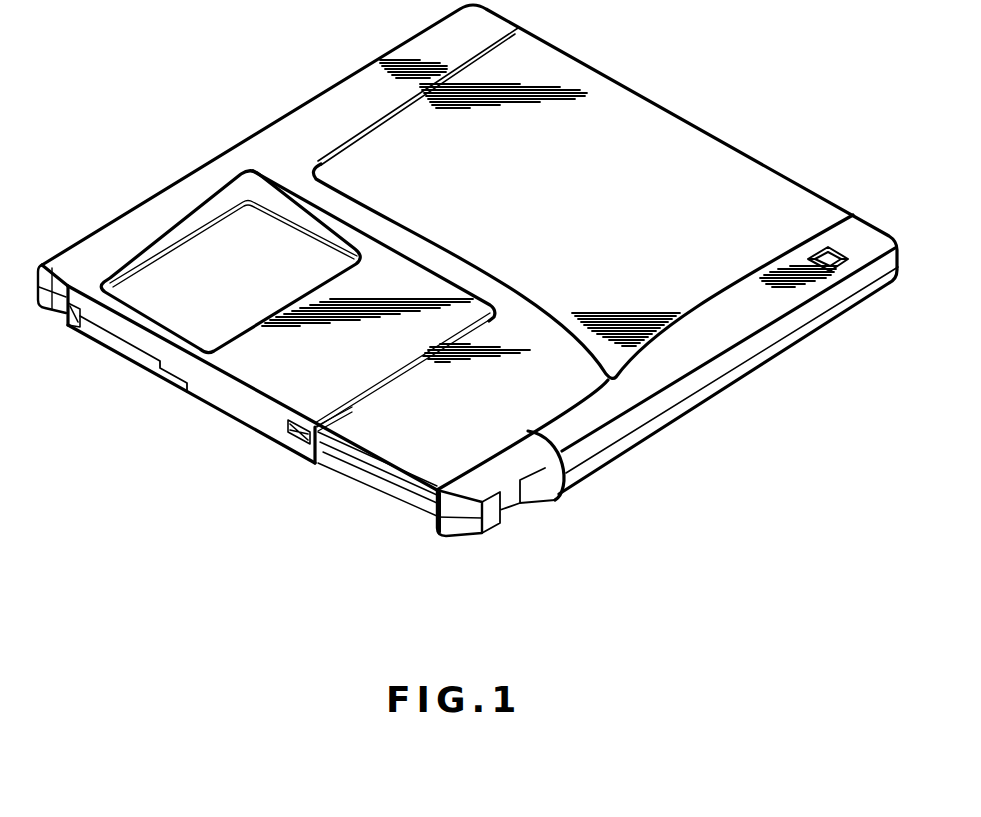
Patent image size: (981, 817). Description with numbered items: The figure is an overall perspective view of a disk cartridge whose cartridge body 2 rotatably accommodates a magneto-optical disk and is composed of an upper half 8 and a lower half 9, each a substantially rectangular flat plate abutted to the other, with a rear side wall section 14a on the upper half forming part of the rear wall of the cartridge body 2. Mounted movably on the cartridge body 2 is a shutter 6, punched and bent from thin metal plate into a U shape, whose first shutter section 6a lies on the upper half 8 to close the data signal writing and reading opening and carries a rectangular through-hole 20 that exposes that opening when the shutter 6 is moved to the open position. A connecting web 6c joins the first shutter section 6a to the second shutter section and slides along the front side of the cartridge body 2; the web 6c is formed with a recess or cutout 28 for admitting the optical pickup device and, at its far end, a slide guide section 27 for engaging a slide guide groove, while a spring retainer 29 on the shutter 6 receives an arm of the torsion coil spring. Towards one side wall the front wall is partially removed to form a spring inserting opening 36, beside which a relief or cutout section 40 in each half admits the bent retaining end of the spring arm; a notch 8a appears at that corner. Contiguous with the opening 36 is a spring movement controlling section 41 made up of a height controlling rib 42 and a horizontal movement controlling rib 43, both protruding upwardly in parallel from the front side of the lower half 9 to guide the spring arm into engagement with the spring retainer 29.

The cartridge body 2 is at (762, 425).
The shutter 6 is at (250, 385).
The first shutter section 6a is at (397, 263).
The connecting section or web 6c is at (255, 416).
The upper half 8 is at (727, 364).
The notch 8a is at (557, 480).
The lower half 9 is at (680, 408).
The rear side wall section 14a is at (652, 103).
The rectangular through-hole 20 is at (200, 228).
The slide guide section 27 is at (67, 323).
The recess or cutout 28 is at (157, 365).
The spring retainer 29 is at (291, 436).
The spring inserting opening 36 is at (392, 484).
The relief or cutout section 40 is at (427, 480).
The spring movement controlling section 41 is at (318, 541).
The height controlling rib 42 is at (330, 452).
The horizontal movement controlling rib 43 is at (350, 462).